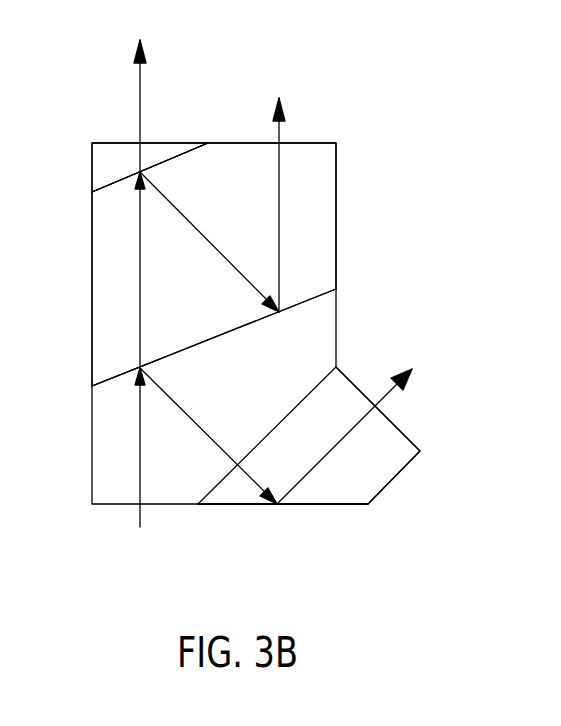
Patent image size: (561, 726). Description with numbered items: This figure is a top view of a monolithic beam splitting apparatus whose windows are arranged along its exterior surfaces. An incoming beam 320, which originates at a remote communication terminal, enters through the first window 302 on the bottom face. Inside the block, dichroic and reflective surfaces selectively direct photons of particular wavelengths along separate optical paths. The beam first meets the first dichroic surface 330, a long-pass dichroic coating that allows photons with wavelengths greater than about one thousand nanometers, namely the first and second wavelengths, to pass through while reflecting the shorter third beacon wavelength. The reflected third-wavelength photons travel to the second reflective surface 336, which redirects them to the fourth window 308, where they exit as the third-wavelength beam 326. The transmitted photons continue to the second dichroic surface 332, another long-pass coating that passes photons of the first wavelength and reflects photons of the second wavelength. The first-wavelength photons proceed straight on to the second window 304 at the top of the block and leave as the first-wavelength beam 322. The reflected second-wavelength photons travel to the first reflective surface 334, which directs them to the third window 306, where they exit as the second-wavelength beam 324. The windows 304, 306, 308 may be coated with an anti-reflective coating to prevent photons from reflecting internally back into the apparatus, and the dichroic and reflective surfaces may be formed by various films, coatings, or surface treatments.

The first window 302 is at (172, 507).
The second window 304 is at (178, 142).
The third window 306 is at (248, 142).
The fourth window 308 is at (365, 395).
The incoming beam 320 is at (138, 513).
The λ1 beam 322 is at (138, 107).
The λ2 beam 324 is at (282, 135).
The λ3 beam 326 is at (392, 393).
The first dichroic surface 330 is at (122, 373).
The second dichroic surface 332 is at (115, 182).
The first reflective surface 334 is at (305, 300).
The second reflective surface 336 is at (333, 507).